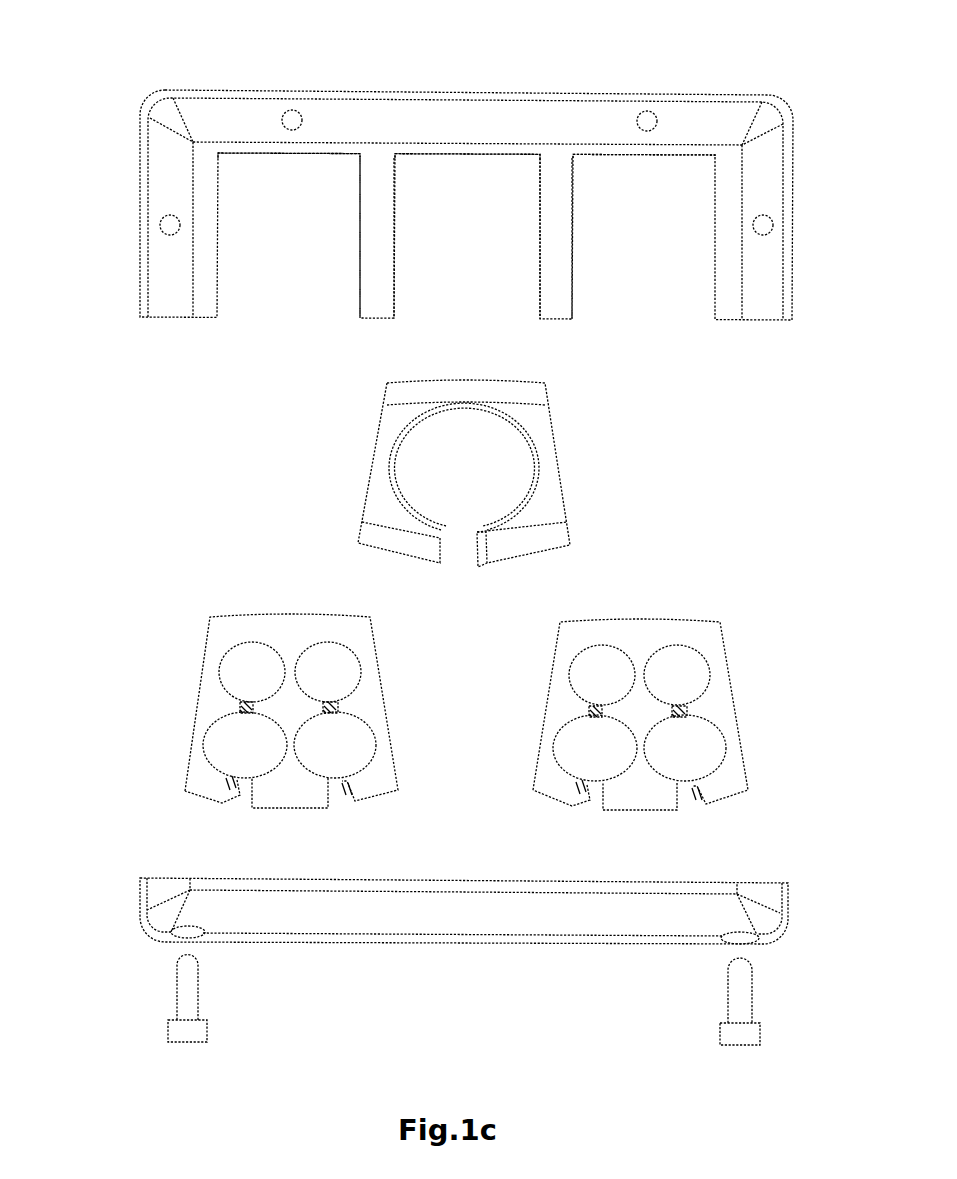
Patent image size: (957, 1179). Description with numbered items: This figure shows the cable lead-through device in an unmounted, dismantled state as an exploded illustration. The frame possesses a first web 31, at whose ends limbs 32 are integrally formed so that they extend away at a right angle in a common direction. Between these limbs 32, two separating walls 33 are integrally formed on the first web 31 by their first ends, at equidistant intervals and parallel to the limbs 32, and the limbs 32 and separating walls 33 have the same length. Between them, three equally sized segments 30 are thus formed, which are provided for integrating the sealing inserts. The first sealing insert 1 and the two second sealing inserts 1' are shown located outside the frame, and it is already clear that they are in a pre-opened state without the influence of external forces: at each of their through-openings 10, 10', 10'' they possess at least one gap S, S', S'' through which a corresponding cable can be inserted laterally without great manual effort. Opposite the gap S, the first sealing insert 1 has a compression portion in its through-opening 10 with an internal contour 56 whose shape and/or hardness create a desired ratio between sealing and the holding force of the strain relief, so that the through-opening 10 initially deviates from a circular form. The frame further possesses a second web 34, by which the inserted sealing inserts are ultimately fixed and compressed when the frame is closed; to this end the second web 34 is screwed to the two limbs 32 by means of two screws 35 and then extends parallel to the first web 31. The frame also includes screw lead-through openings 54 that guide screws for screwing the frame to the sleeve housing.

The first web 31 is at (487, 89).
The limbs 32 is at (141, 263).
The separating walls 33 is at (396, 212).
The segments 30 is at (466, 218).
The screw lead-through openings 54 is at (295, 110).
The first sealing insert 1 is at (514, 473).
The internal contour 56 is at (525, 433).
The through-opening 10 is at (412, 467).
The gap S is at (466, 496).
The second sealing inserts 1' is at (473, 698).
The through-opening 10'' is at (464, 673).
The through-opening 10' is at (508, 746).
The gap S'' is at (464, 675).
The gap S' is at (511, 756).
The second web 34 is at (452, 946).
The screws 35 is at (185, 1045).